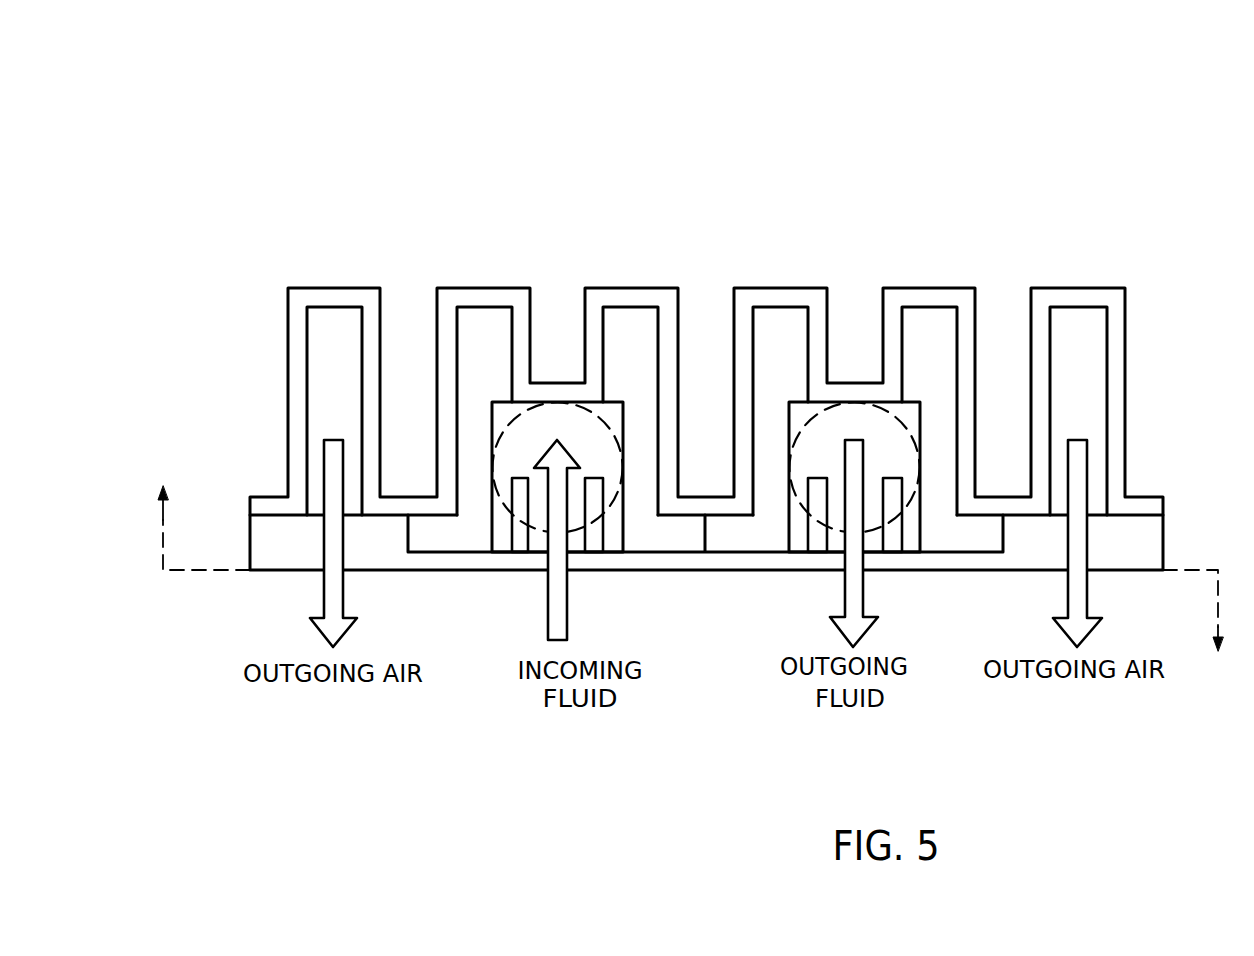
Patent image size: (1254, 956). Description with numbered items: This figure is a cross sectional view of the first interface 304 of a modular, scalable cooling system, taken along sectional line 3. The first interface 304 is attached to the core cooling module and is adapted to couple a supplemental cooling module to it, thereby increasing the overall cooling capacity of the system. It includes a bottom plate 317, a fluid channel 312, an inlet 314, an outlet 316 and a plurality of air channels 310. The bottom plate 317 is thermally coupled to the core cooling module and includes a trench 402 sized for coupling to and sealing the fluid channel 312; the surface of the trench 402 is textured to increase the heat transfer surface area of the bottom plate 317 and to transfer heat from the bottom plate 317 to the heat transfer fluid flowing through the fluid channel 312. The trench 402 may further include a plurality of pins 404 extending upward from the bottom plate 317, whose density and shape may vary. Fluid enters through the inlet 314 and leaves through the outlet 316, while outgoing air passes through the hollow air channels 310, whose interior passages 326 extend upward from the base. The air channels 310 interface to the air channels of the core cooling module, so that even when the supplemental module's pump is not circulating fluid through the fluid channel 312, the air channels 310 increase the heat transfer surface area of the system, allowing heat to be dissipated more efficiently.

The first interface 304 is at (659, 413).
The air channels 310 is at (310, 359).
The fin fluid channel 326 is at (320, 353).
The inlet 314 is at (567, 423).
The outlet 316 is at (855, 422).
The fluid channel 312 is at (613, 458).
The bottom plate 317 is at (443, 565).
The trench 402 is at (501, 566).
The pins 404 is at (597, 537).
The sectional line 3 is at (696, 569).